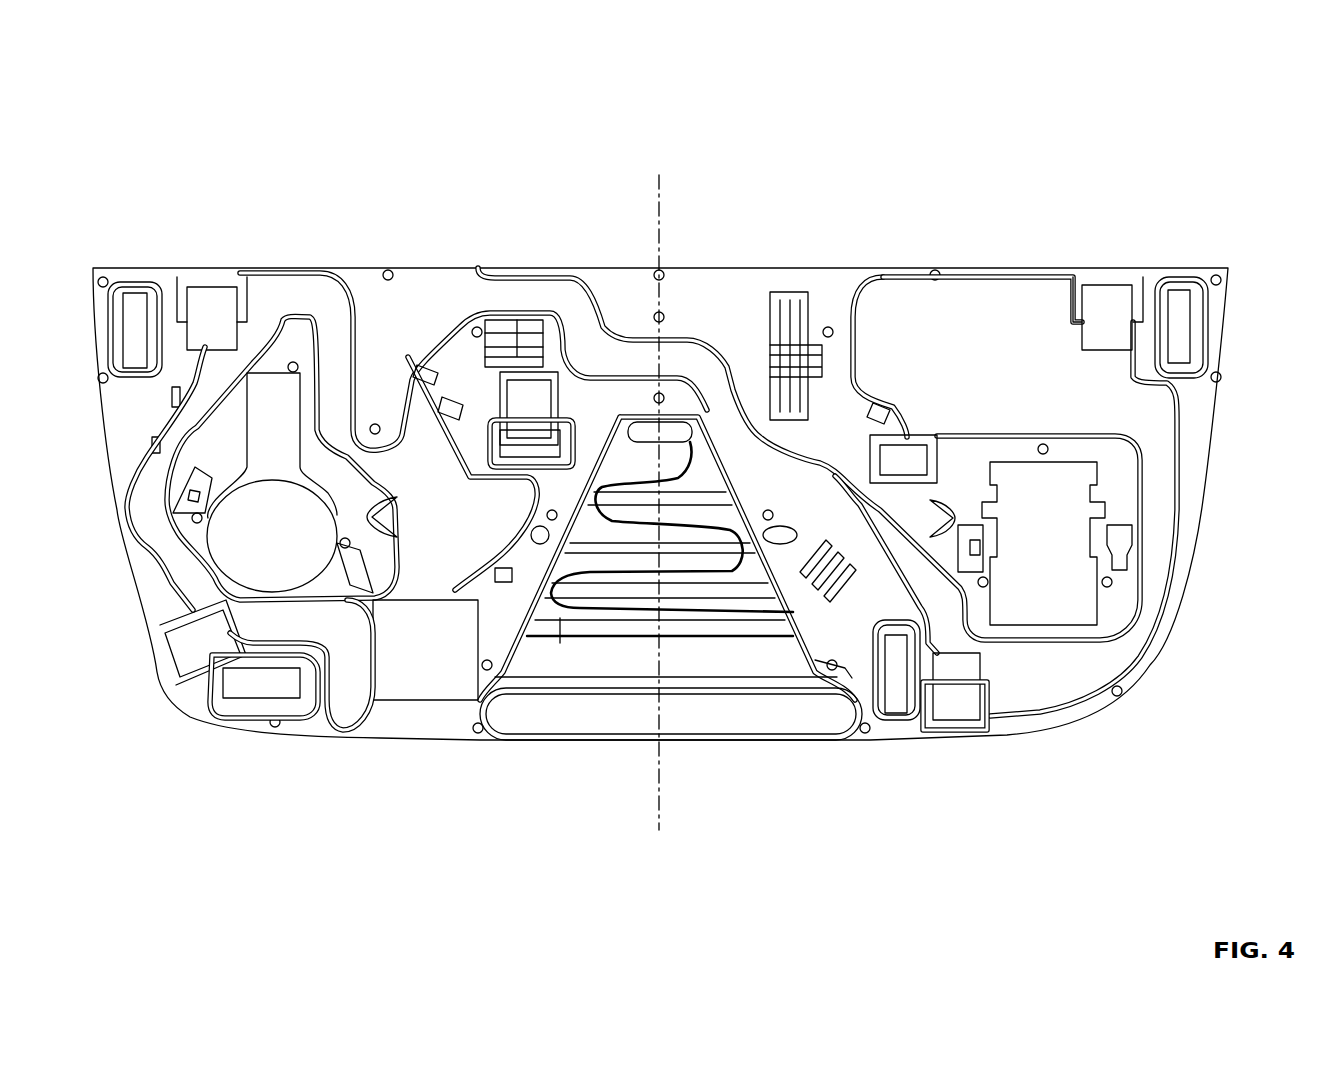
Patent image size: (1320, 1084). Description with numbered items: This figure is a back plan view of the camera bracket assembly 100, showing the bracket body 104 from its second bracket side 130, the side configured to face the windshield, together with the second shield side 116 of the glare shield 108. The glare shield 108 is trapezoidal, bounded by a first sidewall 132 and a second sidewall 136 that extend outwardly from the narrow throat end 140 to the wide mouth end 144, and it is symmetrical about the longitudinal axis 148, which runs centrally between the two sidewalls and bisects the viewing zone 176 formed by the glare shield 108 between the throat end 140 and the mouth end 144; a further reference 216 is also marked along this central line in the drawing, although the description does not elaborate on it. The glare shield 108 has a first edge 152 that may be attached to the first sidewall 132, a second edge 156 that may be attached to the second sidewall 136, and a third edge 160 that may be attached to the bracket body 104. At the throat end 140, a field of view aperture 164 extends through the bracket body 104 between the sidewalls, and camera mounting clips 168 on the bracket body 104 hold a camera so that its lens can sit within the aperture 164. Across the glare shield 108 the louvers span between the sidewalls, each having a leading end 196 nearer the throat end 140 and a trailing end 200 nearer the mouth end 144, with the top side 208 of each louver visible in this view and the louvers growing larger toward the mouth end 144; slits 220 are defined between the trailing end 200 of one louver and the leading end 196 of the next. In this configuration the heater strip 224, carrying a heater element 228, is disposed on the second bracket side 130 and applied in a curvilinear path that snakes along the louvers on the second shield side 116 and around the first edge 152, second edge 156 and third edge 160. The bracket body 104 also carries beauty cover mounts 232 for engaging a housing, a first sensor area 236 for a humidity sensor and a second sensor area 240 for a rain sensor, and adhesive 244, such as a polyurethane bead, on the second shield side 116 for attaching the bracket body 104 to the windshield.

The camera bracket assembly 100 is at (1195, 148).
The bracket body 104 is at (355, 278).
The glare shield 108 is at (748, 612).
The second shield side 116 is at (682, 628).
The second bracket side 130 is at (330, 318).
The first sidewall 132 is at (797, 535).
The second sidewall 136 is at (603, 452).
The throat end 140 is at (703, 460).
The mouth end 144 is at (838, 683).
The longitudinal axis 148 is at (658, 790).
The first edge 152 is at (745, 430).
The second edge 156 is at (545, 548).
The third edge 160 is at (745, 580).
The field of view aperture 164 is at (642, 418).
The camera mounting clips 168 is at (527, 332).
The viewing zone 176 is at (696, 444).
The leading end 196 is at (530, 645).
The trailing end 200 is at (573, 627).
The top side 208 is at (558, 620).
The center axis 216 is at (660, 192).
The slits 220 is at (705, 633).
The heater strip 224 is at (597, 612).
The heater element 228 is at (630, 590).
The beauty cover mounts 232 is at (1193, 347).
The first sensor area 236 is at (1063, 590).
The second sensor area 240 is at (232, 545).
The adhesive 244 is at (967, 703).